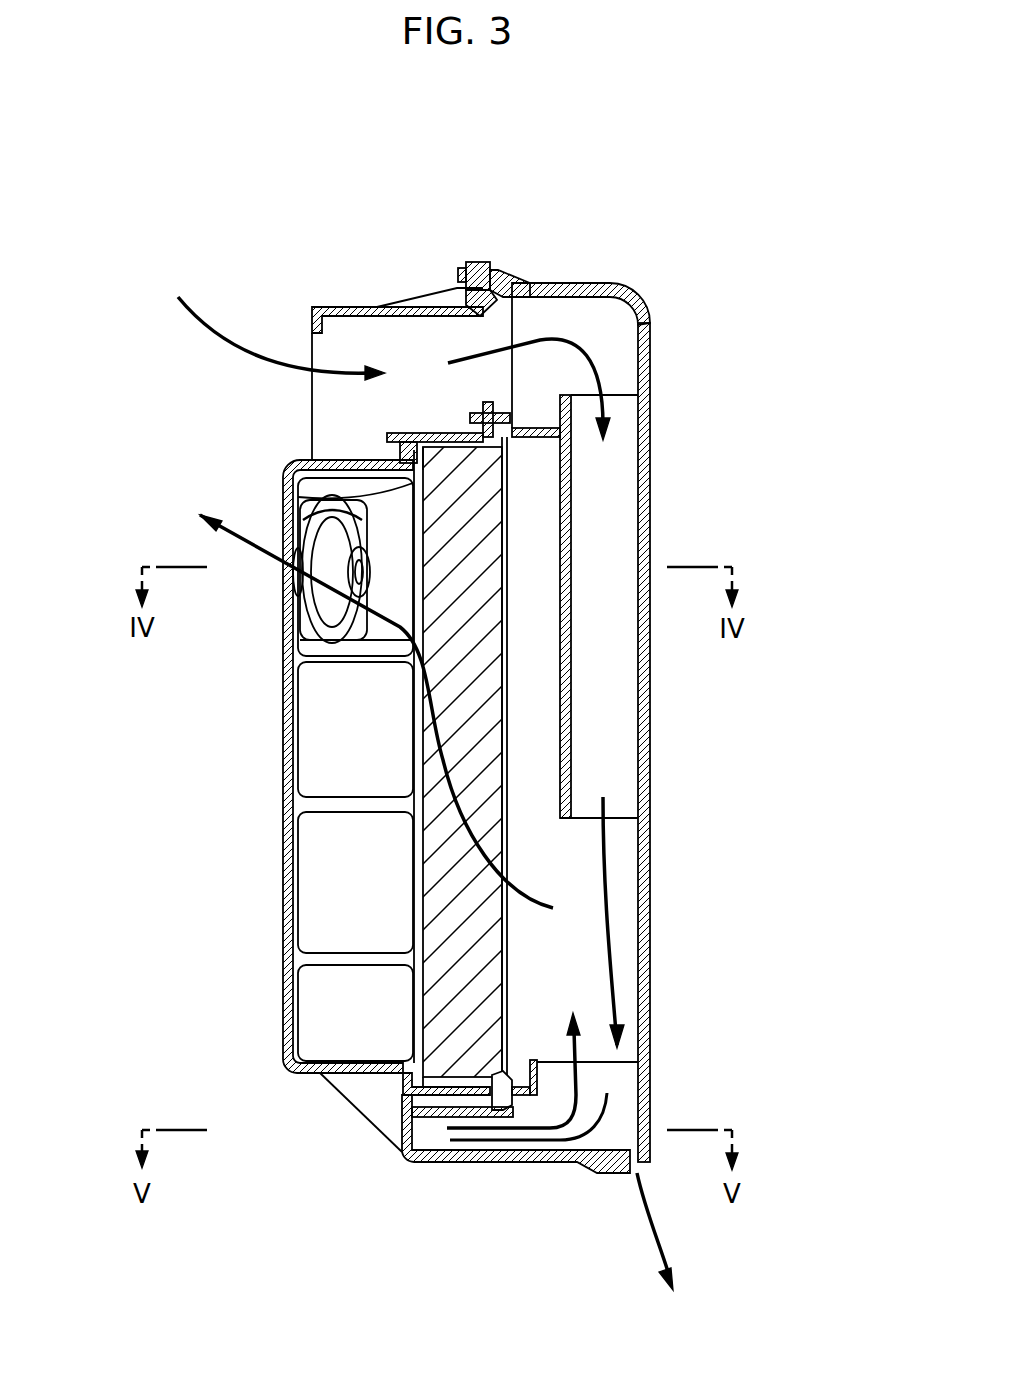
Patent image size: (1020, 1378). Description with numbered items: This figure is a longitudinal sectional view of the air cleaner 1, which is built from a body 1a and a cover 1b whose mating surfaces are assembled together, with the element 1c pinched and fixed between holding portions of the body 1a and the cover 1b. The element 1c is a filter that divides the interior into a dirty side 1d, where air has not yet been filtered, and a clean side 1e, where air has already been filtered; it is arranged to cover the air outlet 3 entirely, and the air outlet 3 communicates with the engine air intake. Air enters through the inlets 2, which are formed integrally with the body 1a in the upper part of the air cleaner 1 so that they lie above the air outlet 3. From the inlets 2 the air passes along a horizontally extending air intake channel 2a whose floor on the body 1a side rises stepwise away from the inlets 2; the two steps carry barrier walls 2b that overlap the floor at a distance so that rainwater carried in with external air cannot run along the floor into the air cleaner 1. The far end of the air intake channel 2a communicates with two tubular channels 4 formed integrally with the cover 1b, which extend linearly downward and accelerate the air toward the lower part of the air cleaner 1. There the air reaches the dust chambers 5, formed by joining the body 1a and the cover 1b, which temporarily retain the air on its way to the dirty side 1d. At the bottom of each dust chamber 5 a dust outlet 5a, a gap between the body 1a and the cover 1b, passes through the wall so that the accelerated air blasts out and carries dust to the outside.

The air cleaner 1 is at (535, 205).
The body 1a is at (333, 288).
The cover 1b is at (610, 250).
The element 1c is at (499, 682).
The dirty side 1d is at (540, 742).
The clean side 1e is at (377, 587).
The inlets 2 is at (308, 348).
The air intake channel 2a is at (463, 348).
The barrier walls 2b is at (388, 437).
The air outlet 3 is at (322, 548).
The tubular channels 4 is at (592, 530).
The dust chambers 5 is at (623, 1097).
The dust outlet 5a is at (637, 1163).